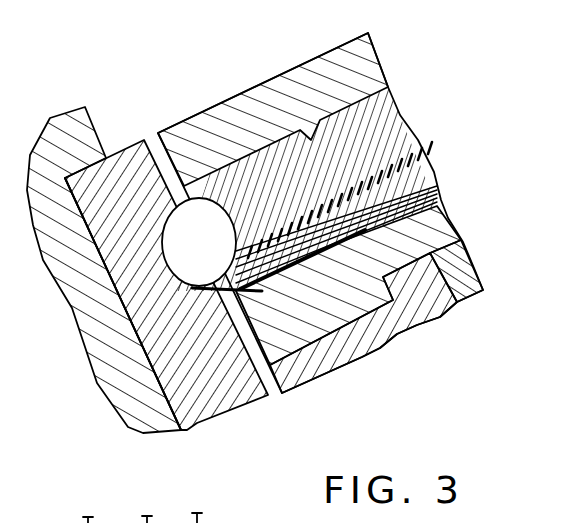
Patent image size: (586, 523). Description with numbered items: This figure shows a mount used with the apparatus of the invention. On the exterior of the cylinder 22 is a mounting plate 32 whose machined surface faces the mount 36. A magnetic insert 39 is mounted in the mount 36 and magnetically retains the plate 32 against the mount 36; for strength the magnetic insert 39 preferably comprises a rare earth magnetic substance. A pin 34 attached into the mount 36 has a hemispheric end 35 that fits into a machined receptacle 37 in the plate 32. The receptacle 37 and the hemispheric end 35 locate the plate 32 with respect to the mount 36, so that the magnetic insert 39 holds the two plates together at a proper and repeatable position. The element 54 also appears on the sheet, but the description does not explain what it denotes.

The cylinder 22 is at (73, 137).
The mounting plate 32 is at (133, 172).
The pin 34 is at (258, 163).
The hemispheric end 35 is at (192, 248).
The mount 36 is at (298, 83).
The receptacle 37 is at (150, 284).
The magnetic insert 39 is at (352, 345).
The connector 54 is at (0, 492).